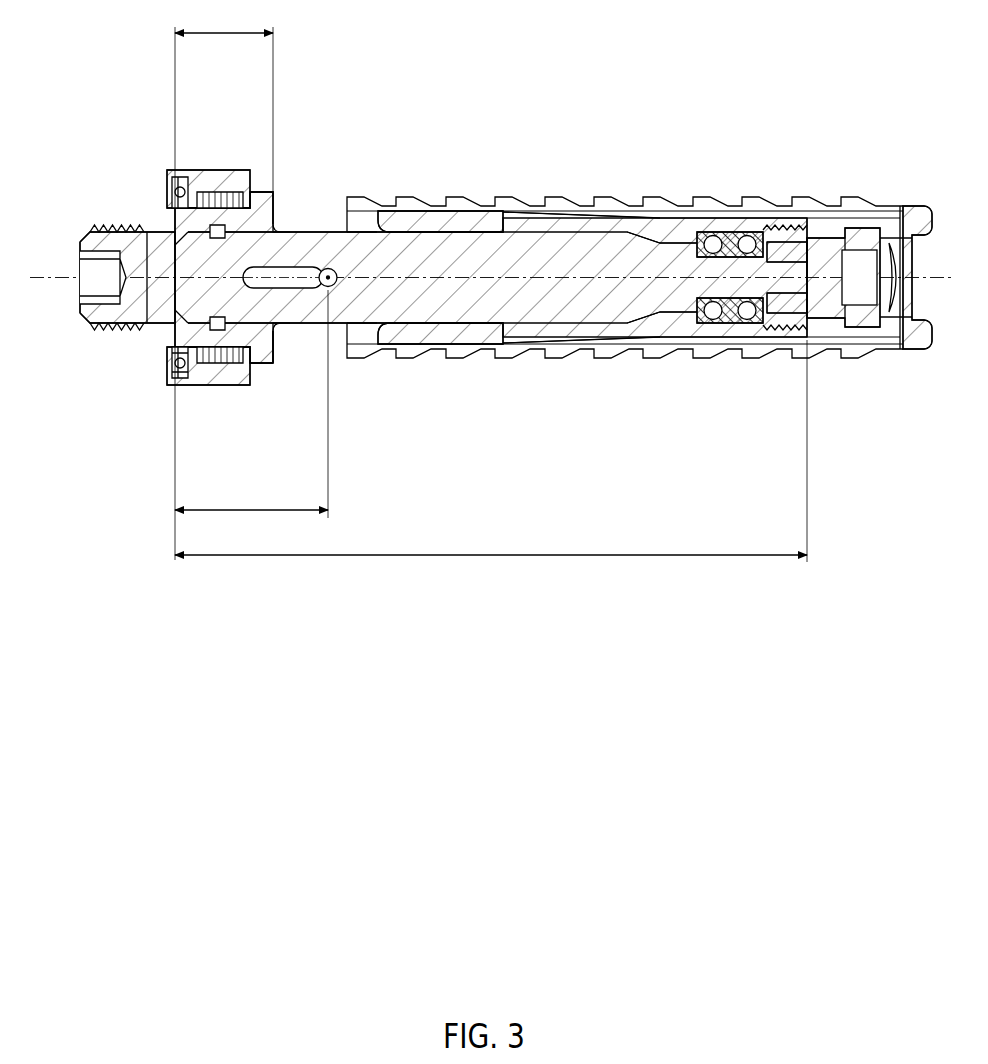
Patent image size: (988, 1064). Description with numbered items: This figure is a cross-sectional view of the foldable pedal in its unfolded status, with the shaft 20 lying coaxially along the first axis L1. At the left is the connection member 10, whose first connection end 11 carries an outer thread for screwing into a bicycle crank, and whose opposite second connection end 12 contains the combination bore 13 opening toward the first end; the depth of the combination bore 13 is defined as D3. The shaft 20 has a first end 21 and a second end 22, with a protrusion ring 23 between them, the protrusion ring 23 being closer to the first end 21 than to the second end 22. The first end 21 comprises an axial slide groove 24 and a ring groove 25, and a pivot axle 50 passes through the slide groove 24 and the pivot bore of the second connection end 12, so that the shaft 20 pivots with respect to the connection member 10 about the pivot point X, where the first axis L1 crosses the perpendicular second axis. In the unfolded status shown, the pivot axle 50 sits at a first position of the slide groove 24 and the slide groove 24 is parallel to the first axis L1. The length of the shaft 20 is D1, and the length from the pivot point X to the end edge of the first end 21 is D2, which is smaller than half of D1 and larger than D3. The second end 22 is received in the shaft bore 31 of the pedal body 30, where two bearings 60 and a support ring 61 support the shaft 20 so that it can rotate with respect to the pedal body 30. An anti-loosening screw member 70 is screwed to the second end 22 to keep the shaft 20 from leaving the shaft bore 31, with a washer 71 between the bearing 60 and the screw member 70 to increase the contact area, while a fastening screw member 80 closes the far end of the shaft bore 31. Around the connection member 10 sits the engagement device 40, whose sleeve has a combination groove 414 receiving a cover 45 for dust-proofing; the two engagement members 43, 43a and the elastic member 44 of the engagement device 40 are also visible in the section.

The connection member 10 is at (117, 214).
The first connection end 11 is at (123, 312).
The second connection end 12 is at (262, 362).
The combination bore 13 is at (172, 228).
The shaft 20 is at (452, 300).
The first end 21 is at (258, 252).
The second end 22 is at (716, 300).
The protrusion ring 23 is at (366, 231).
The slide groove 24 is at (303, 322).
The ring groove 25 is at (242, 205).
The pedal body 30 is at (702, 193).
The shaft bore 31 is at (565, 317).
The engagement device 40 is at (186, 155).
The engagement member 43 is at (218, 203).
The engagement member 43a is at (230, 358).
The elastic member 44 is at (176, 194).
The cover 45 is at (172, 363).
The combination groove 414 is at (175, 373).
The pivot axle 50 is at (300, 288).
The bearing 60 is at (700, 310).
The support ring 61 is at (445, 318).
The anti-loosening screw member 70 is at (788, 250).
The washer 71 is at (755, 298).
The fastening screw member 80 is at (866, 240).
The pivot point X is at (334, 268).
The first axis L1 is at (60, 270).
The length of the shaft D1 is at (491, 451).
The length from pivot point to first end edge D2 is at (251, 404).
The depth of the combination bore D3 is at (224, 282).